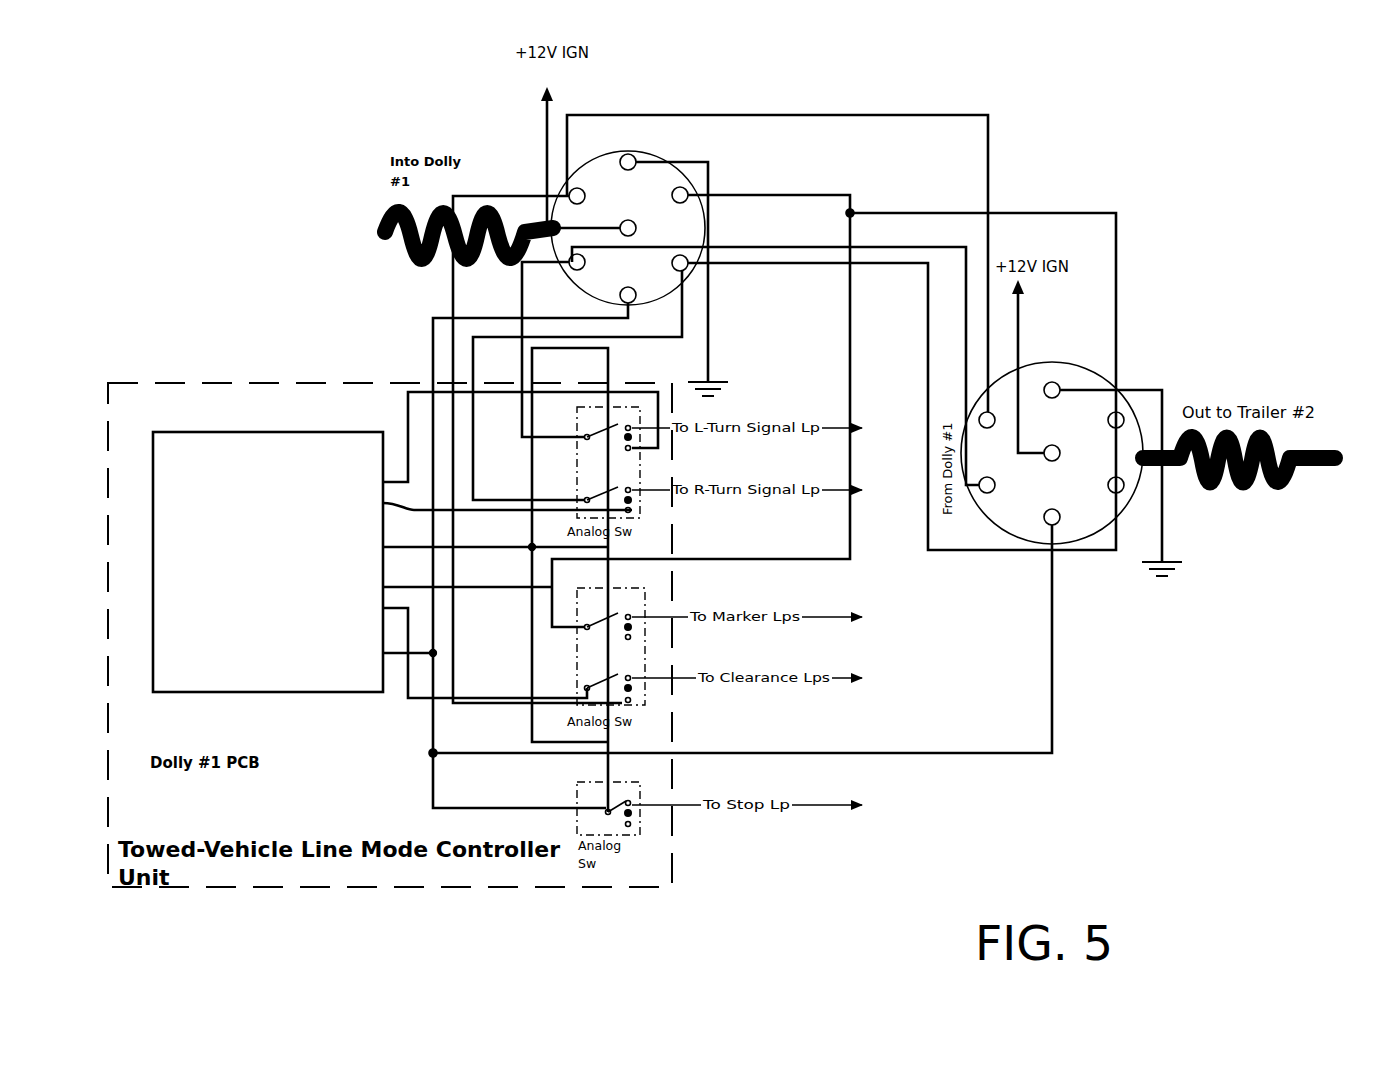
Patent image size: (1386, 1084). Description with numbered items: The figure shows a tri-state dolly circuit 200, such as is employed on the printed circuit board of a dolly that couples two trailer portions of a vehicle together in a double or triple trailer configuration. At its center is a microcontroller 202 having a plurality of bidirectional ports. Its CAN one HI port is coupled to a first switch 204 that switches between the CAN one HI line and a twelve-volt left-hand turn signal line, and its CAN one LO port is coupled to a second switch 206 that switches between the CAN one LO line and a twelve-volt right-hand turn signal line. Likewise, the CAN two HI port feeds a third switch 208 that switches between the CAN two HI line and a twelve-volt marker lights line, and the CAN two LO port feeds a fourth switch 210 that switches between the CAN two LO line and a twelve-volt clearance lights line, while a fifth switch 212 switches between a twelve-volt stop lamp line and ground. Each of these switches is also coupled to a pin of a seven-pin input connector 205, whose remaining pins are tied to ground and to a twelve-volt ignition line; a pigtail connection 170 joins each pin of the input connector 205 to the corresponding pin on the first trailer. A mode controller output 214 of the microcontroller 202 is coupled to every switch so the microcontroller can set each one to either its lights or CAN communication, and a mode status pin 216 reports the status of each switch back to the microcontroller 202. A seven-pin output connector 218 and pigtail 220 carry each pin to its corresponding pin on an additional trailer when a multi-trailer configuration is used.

The pigtail connection 170 is at (378, 216).
The tri-state dolly circuit 200 is at (272, 383).
The microcontroller 202 is at (225, 432).
The first switch 204 is at (605, 428).
The input 7-pin connector 205 is at (646, 150).
The second switch 206 is at (604, 484).
The third switch 208 is at (614, 611).
The fourth switch 210 is at (614, 672).
The fifth switch 212 is at (595, 802).
The mode controller output 214 is at (284, 541).
The mode status pin 216 is at (260, 647).
The output 7-pin connector 218 is at (1095, 371).
The pigtail 220 is at (1297, 493).